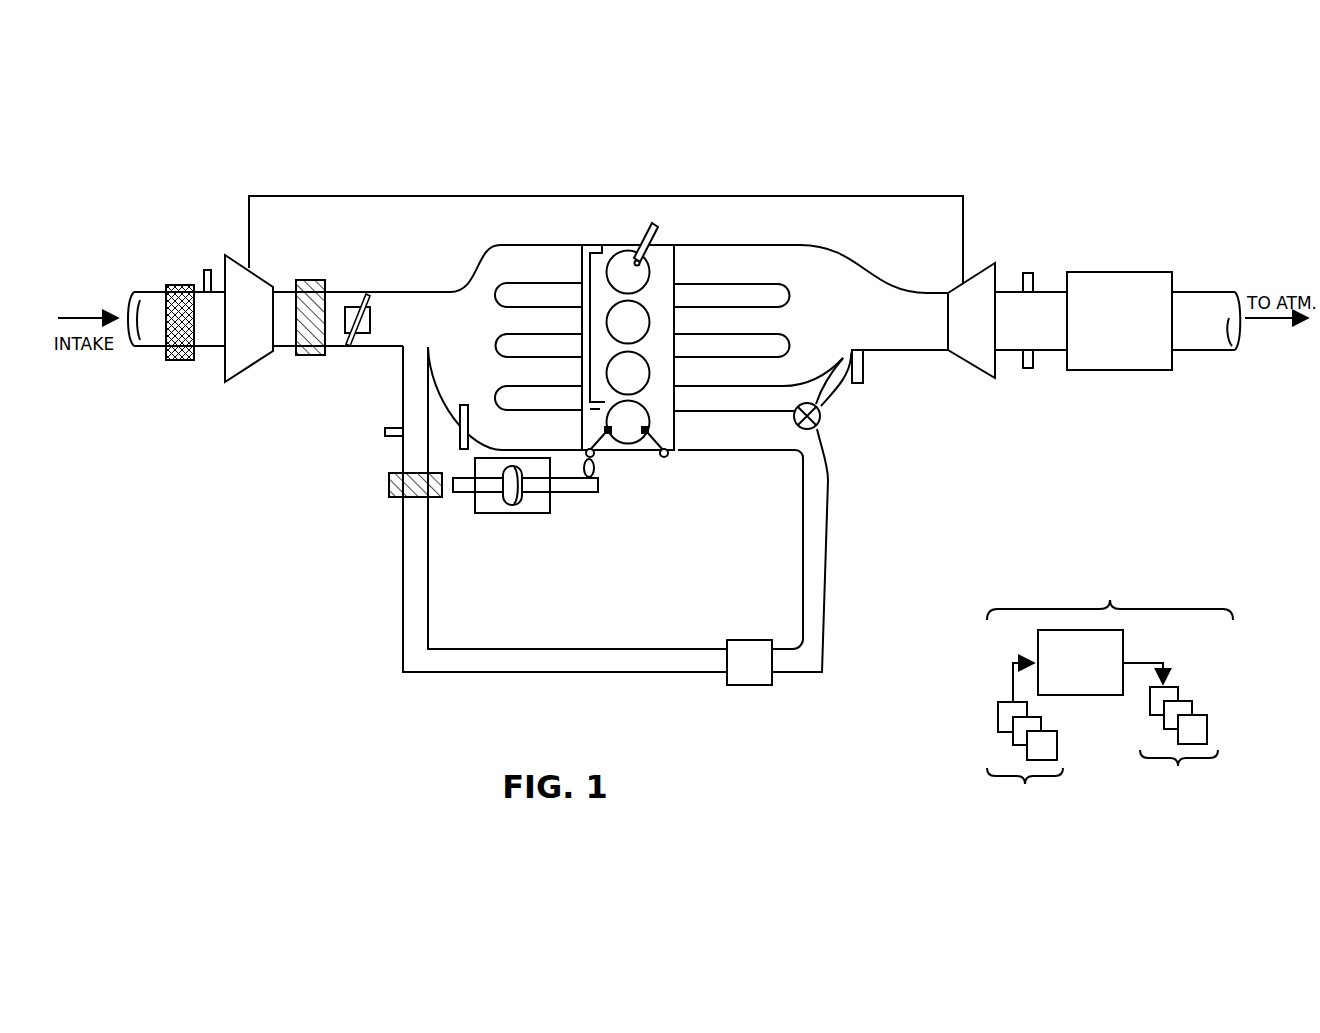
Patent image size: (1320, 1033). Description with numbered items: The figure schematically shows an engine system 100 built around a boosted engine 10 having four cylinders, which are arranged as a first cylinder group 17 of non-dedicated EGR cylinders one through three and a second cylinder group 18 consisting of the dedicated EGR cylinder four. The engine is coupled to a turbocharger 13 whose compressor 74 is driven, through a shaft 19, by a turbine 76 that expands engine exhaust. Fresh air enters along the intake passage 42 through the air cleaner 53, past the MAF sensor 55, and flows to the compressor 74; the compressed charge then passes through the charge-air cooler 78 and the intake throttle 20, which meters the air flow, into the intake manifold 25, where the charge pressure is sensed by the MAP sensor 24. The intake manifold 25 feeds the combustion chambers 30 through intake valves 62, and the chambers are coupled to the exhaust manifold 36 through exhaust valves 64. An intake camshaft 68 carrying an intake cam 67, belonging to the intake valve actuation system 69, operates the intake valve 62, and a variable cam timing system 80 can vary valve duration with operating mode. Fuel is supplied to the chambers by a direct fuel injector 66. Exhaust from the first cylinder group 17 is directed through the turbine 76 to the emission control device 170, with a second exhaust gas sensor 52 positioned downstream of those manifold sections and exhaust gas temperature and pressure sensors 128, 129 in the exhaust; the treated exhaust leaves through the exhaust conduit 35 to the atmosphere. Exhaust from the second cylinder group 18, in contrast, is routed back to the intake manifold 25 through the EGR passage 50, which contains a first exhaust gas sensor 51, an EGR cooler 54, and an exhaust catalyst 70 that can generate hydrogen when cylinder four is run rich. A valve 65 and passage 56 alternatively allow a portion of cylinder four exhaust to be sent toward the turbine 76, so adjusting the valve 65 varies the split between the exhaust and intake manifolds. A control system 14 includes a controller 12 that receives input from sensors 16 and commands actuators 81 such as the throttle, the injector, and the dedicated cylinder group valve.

The engine system 100 is at (1204, 131).
The engine 10 is at (672, 247).
The controller 12 is at (1080, 662).
The turbocharger 13 is at (256, 394).
The control system 14 is at (1110, 692).
The sensors 16 is at (1025, 742).
The first cylinder group 17 is at (602, 248).
The second cylinder group 18 is at (590, 445).
The shaft 19 is at (567, 196).
The intake throttle 20 is at (371, 324).
The manifold air pressure (MAP) sensor 24 is at (460, 429).
The intake manifold 25 is at (505, 347).
The combustion chambers 30 is at (648, 270).
The exhaust conduit 35 is at (1207, 292).
The exhaust manifold 36 is at (811, 315).
The intake passage 42 is at (150, 347).
The EGR passage 50 is at (625, 673).
The first exhaust gas sensor 51 is at (387, 437).
The second exhaust gas sensor 52 is at (858, 384).
The air cleaner 53 is at (180, 285).
The EGR cooler 54 is at (396, 498).
The MAF sensor 55 is at (208, 270).
The passage 56 is at (821, 417).
The intake valve 62 is at (612, 450).
The exhaust valve 64 is at (652, 441).
The valve 65 is at (816, 424).
The fuel injector 66 is at (642, 243).
The intake cam 67 is at (598, 472).
The intake camshaft 68 is at (573, 494).
The intake valve actuation system 69 is at (536, 508).
The exhaust catalyst 70 is at (749, 662).
The compressor 74 is at (249, 318).
The turbine 76 is at (971, 320).
The charge-air cooler 78 is at (316, 280).
The variable cam timing (VCT) system 80 is at (523, 514).
The actuators 81 is at (1170, 734).
The exhaust gas temperature and pressure sensor 128 is at (1028, 368).
The exhaust gas temperature and pressure sensor 129 is at (1028, 273).
The emission control device 170 is at (1107, 272).